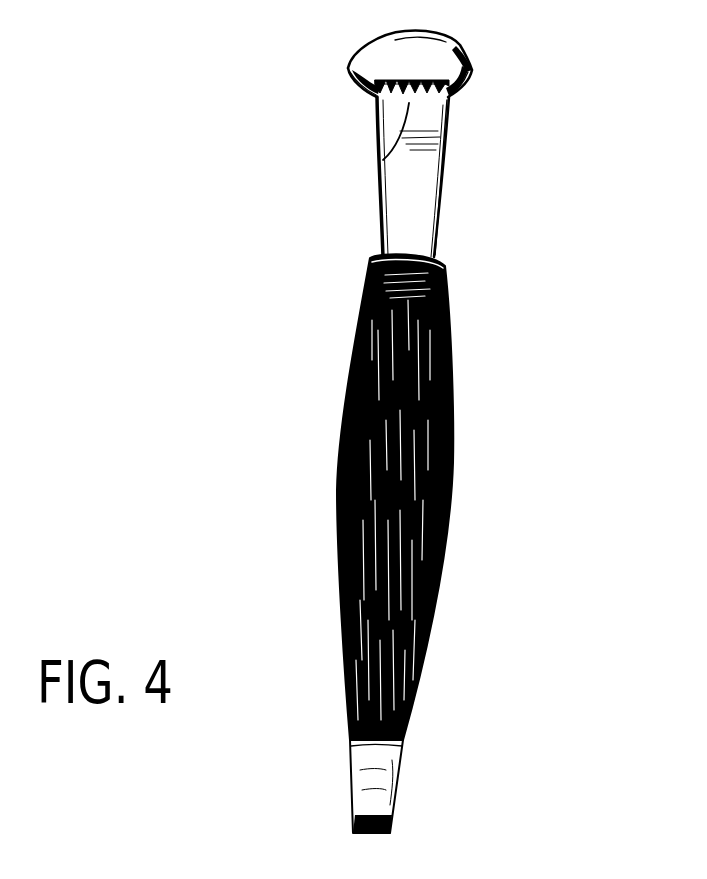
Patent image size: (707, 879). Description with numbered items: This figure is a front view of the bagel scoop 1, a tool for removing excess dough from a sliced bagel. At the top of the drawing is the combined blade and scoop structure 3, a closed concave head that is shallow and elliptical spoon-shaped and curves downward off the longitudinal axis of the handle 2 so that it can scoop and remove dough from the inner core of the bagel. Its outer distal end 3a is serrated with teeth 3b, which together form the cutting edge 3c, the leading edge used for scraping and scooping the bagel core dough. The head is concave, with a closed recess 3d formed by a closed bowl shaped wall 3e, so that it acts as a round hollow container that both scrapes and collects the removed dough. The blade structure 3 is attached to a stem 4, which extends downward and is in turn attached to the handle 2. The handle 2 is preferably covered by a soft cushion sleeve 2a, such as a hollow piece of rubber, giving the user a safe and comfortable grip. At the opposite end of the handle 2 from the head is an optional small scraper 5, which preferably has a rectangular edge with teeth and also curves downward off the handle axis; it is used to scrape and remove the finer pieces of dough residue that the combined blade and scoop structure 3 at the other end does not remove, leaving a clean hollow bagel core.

The bagel scoop 1 is at (563, 257).
The handle 2 is at (435, 245).
The soft cushion sleeve 2a is at (443, 550).
The combined blade and scoop structure 3 is at (443, 43).
The outer distal end 3a is at (343, 98).
The teeth 3b is at (397, 97).
The cutting edge 3c is at (383, 160).
The closed recess 3d is at (455, 106).
The closed bowl shaped wall 3e is at (397, 53).
The stem 4 is at (437, 163).
The small scraper 5 is at (393, 827).